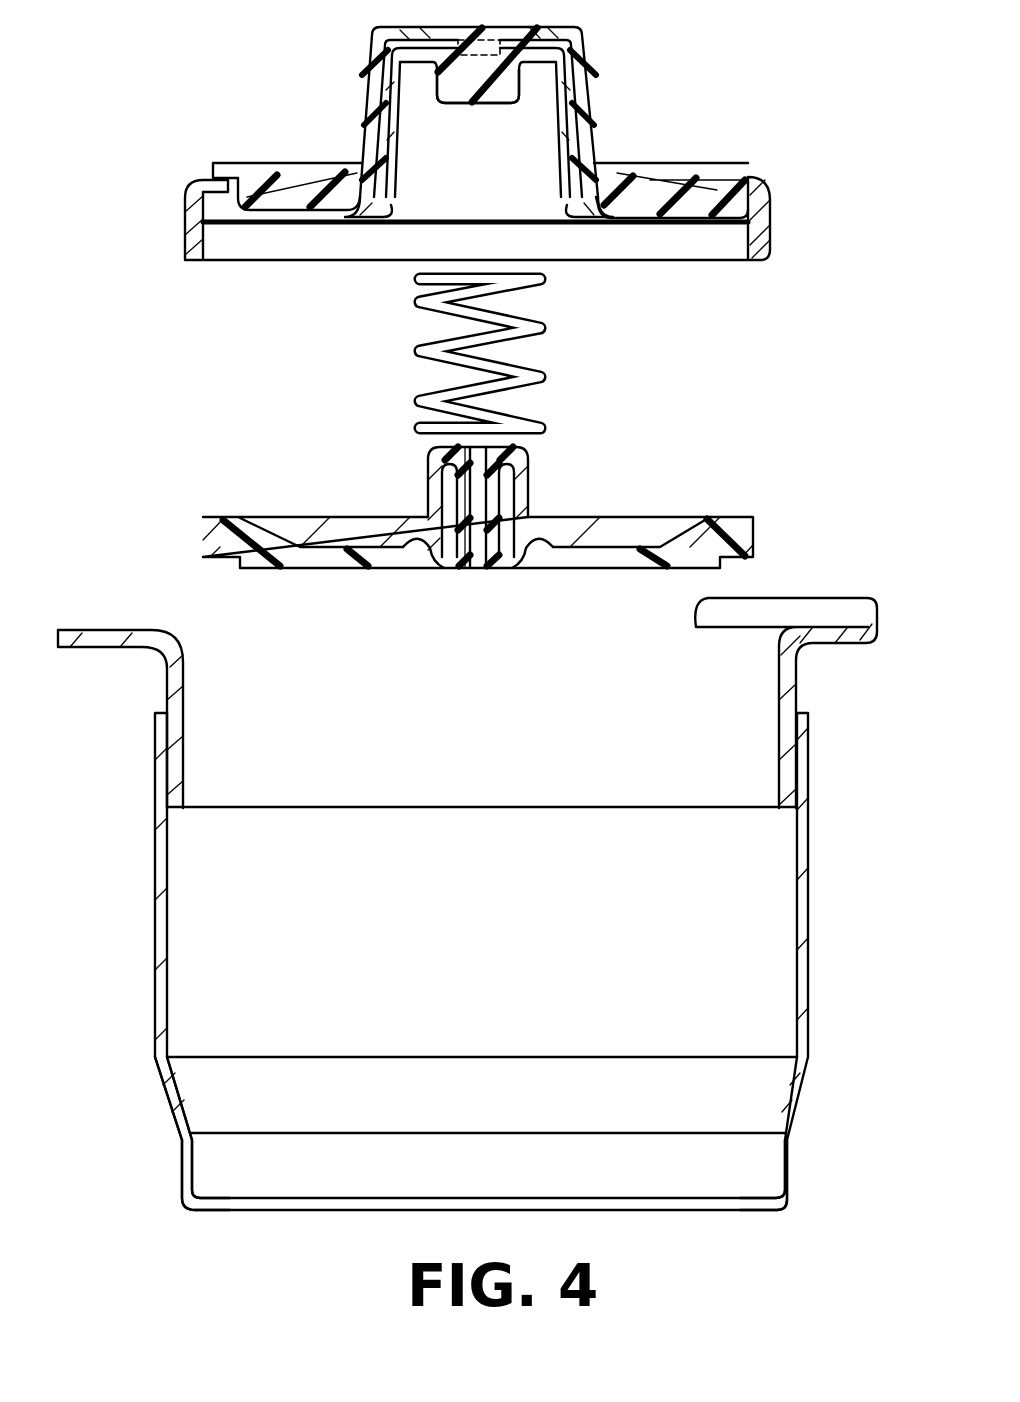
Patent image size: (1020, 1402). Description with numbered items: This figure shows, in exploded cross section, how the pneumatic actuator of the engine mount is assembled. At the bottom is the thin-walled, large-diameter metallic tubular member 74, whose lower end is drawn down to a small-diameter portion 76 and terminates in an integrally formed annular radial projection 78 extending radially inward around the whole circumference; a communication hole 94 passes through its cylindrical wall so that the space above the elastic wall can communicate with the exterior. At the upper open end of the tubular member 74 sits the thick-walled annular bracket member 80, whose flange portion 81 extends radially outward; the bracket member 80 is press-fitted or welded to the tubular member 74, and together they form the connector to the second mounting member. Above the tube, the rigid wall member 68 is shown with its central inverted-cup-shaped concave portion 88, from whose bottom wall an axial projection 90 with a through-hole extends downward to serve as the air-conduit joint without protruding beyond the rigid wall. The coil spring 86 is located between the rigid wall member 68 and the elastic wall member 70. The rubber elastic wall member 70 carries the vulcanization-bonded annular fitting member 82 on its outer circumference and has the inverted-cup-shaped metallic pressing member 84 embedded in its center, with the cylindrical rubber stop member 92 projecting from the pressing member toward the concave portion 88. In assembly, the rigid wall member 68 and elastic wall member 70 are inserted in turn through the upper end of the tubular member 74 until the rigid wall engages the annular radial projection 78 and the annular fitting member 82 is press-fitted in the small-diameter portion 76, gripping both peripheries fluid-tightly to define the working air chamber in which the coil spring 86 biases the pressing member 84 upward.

The rigid wall member 68 is at (343, 560).
The elastic wall member 70 is at (302, 193).
The tubular member 74 is at (818, 942).
The small-diameter portion 76 is at (182, 1162).
The annular radial projection 78 is at (757, 1205).
The bracket member 80 is at (172, 680).
The flange portion 81 is at (832, 640).
The annular fitting member 82 is at (765, 233).
The pressing member 84 is at (573, 123).
The coil spring 86 is at (556, 373).
The concave portion 88 is at (455, 520).
The axial projection 90 is at (502, 553).
The stop member 92 is at (487, 97).
The communication hole 94 is at (172, 1112).